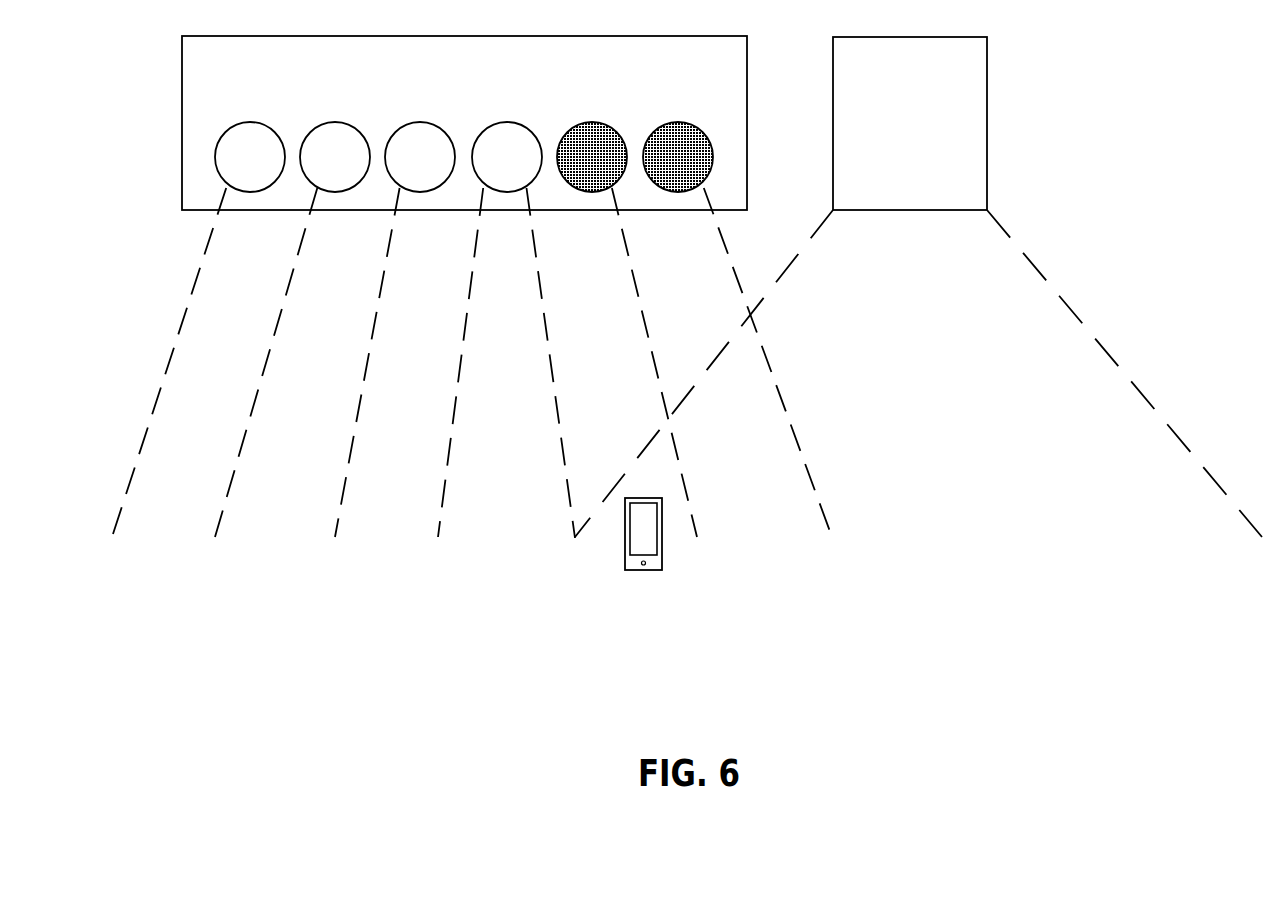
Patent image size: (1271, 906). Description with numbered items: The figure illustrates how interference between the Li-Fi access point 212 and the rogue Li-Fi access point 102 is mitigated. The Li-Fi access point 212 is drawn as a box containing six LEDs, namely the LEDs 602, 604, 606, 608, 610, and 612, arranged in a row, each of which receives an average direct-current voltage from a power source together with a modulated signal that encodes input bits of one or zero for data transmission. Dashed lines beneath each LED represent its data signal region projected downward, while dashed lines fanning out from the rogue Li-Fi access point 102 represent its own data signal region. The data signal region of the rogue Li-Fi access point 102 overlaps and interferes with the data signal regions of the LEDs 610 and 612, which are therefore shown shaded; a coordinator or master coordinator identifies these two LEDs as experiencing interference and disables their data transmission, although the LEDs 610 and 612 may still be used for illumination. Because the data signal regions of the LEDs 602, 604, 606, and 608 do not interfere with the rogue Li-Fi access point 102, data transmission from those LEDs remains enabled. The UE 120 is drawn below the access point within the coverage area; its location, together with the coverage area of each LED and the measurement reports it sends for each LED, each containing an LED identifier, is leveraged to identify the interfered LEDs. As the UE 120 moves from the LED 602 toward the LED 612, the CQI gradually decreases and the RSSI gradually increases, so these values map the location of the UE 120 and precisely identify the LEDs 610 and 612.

The Li-Fi access point 212 is at (464, 123).
The rogue Li-Fi access point 102 is at (918, 287).
The UE 120 is at (625, 556).
The LED 602 is at (198, 329).
The LED 604 is at (292, 329).
The LED 606 is at (395, 329).
The LED 608 is at (506, 330).
The LED 610 is at (627, 329).
The LED 612 is at (737, 329).